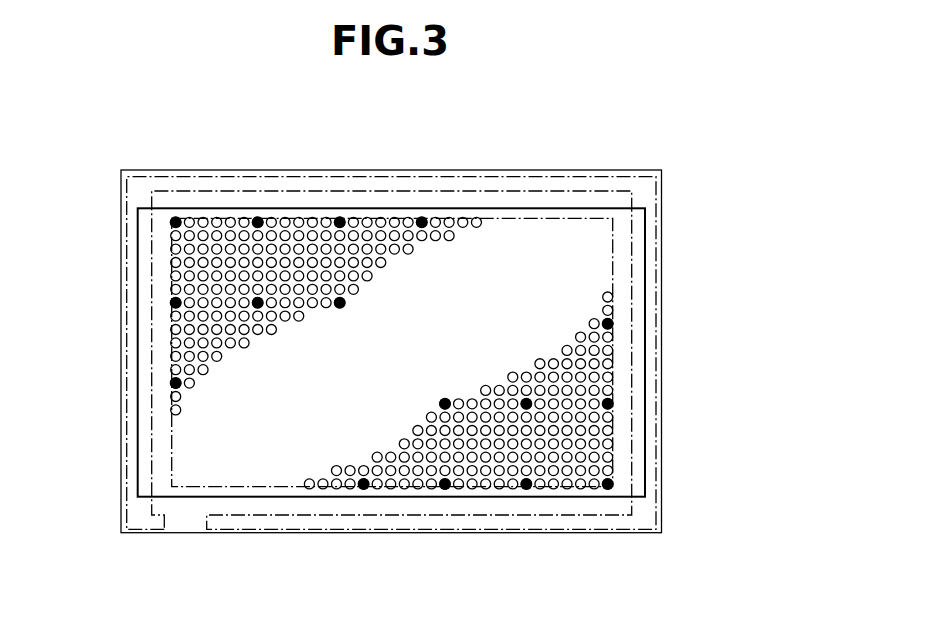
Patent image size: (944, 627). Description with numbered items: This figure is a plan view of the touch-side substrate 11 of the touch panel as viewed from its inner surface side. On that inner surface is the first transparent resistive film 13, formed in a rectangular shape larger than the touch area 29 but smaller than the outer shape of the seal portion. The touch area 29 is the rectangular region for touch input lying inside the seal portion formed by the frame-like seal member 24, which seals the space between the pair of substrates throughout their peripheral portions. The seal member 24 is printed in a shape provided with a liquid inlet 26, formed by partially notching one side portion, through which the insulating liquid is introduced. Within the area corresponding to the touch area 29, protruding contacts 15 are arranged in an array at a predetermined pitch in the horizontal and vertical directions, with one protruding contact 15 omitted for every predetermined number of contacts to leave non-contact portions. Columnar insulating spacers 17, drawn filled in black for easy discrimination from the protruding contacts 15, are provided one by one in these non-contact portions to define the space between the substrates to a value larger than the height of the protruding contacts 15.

The touch-side substrate 11 is at (628, 170).
The first transparent resistive film 13 is at (148, 476).
The protruding contact 15 is at (189, 217).
The insulating spacer 17 is at (176, 216).
The frame-like seal member 24 is at (540, 189).
The liquid inlet 26 is at (188, 524).
The touch area 29 is at (592, 277).